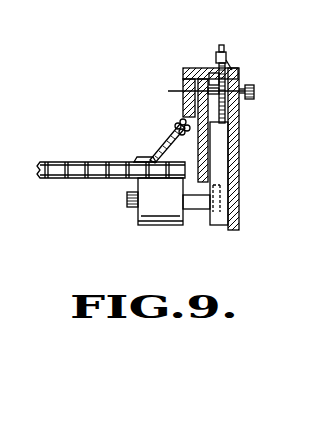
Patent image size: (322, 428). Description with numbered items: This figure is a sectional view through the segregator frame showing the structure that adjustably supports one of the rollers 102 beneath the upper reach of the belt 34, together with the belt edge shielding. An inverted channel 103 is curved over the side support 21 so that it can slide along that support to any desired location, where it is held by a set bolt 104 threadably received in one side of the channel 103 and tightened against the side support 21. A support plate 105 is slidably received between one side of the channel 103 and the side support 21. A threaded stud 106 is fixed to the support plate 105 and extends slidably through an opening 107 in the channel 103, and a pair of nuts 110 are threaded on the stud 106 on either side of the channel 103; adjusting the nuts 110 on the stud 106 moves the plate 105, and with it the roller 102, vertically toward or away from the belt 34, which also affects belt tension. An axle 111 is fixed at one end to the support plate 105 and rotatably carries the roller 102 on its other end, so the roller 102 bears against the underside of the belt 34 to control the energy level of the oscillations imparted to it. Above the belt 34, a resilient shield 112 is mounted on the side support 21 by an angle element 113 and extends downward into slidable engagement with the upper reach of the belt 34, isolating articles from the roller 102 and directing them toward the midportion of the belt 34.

The side support 21 is at (197, 125).
The belt 34 is at (56, 161).
The roller 102 is at (170, 222).
The inverted channel 103 is at (240, 138).
The set bolt 104 is at (254, 91).
The support plate 105 is at (214, 176).
The threaded stud 106 is at (225, 36).
The opening 107 is at (213, 73).
The nut 110 is at (233, 72).
The axle 111 is at (200, 210).
The shield 112 is at (151, 156).
The angle element 113 is at (170, 124).